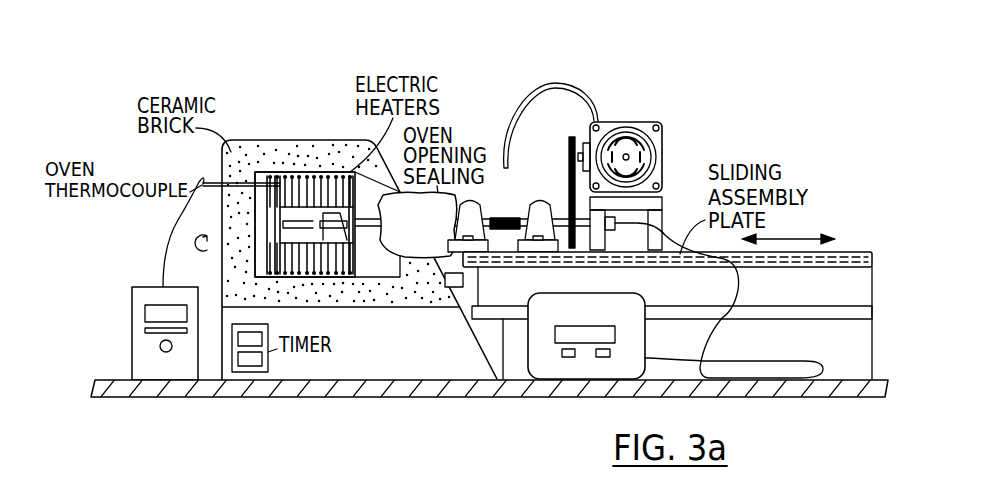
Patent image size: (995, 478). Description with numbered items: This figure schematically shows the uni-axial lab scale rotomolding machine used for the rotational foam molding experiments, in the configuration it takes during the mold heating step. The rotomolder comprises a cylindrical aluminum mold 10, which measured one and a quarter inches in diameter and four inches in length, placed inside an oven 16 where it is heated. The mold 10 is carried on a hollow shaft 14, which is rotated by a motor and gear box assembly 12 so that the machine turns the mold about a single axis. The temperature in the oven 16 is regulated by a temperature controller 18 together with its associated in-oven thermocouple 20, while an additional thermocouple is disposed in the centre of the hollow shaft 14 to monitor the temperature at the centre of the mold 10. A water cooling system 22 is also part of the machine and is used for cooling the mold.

The cylindrical aluminum mold 10 is at (350, 262).
The motor and gear box assembly 12 is at (644, 121).
The hollow shaft 14 is at (512, 217).
The oven 16 is at (322, 367).
The temperature controller 18 is at (138, 330).
The in-oven thermocouple 20 is at (327, 217).
The water cooling system 22 is at (569, 82).